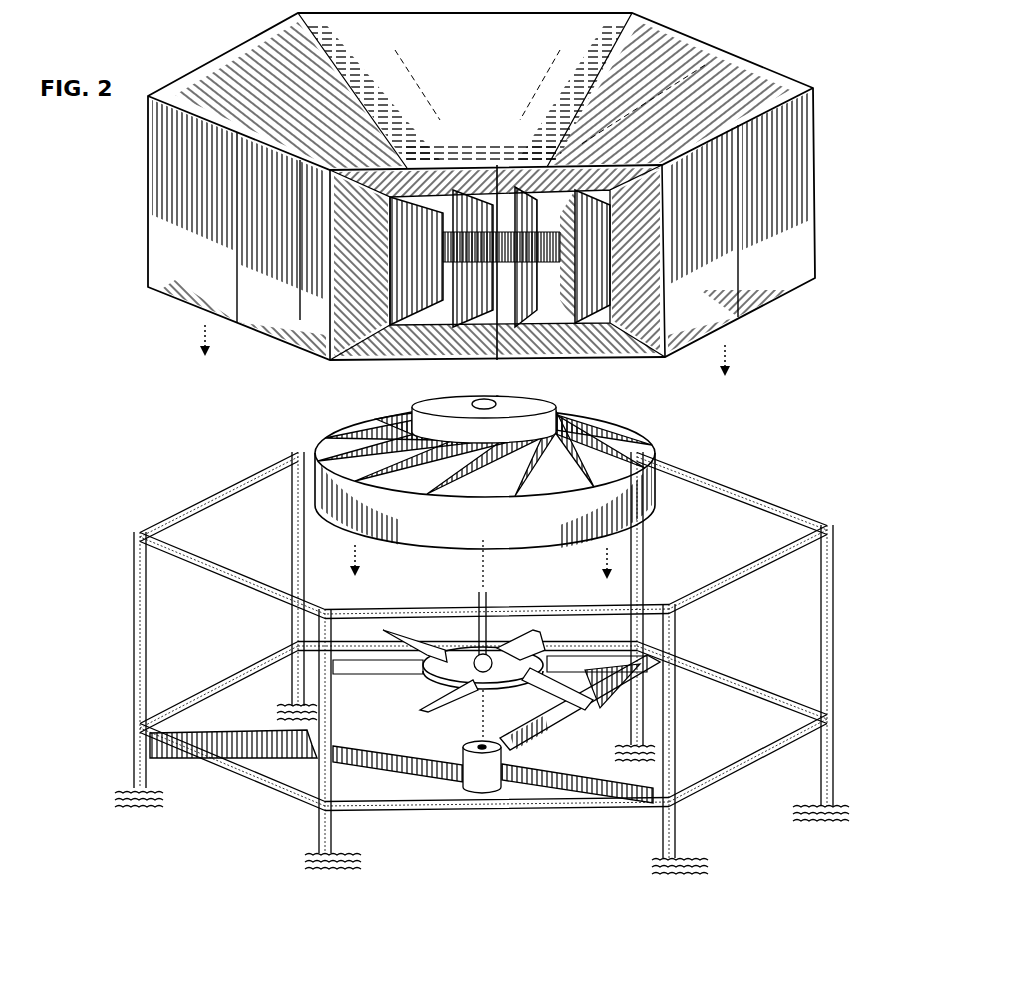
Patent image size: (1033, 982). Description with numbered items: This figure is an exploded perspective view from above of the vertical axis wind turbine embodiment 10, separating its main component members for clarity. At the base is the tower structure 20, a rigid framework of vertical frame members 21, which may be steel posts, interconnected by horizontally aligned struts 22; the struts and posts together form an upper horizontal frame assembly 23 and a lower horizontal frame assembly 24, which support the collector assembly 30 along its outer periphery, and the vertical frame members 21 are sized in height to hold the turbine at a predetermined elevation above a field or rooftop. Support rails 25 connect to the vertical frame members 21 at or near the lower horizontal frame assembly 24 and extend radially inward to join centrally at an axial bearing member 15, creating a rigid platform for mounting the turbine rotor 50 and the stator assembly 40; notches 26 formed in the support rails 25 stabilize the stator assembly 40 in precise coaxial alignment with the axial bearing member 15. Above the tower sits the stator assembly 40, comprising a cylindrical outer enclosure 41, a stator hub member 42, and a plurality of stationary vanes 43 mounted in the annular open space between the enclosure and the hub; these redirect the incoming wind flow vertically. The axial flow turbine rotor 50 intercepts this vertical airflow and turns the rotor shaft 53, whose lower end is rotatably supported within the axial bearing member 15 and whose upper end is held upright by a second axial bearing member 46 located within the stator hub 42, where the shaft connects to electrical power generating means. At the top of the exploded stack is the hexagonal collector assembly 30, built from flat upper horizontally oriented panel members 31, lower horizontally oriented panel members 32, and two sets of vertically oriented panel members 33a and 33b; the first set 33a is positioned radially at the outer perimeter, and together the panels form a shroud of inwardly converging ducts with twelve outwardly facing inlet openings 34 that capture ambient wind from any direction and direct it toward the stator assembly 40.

The embodiment 10 is at (893, 627).
The axial bearing member 15 is at (478, 775).
The tower structure 20 is at (843, 675).
The vertical frame members 21 is at (147, 618).
The horizontally aligned struts 22 is at (197, 556).
The upper horizontal frame assembly 23 is at (132, 538).
The lower horizontal frame assembly 24 is at (133, 724).
The support rails 25 is at (305, 755).
The notches 26 is at (570, 770).
The collector assembly 30 is at (737, 30).
The upper horizontally oriented panel members 31 is at (225, 72).
The lower horizontally oriented panel members 32 is at (205, 290).
The first set of vertical panel members 33a is at (250, 243).
The second set of vertical panel members 33b is at (345, 300).
The inlet openings 34 is at (196, 188).
The stator assembly 40 is at (700, 430).
The cylindrical outer enclosure 41 is at (325, 490).
The stator hub member 42 is at (525, 403).
The stationary vanes 43 is at (620, 460).
The axial bearing member 46 is at (483, 403).
The axial flow turbine rotor 50 is at (417, 690).
The rotor shaft 53 is at (490, 600).